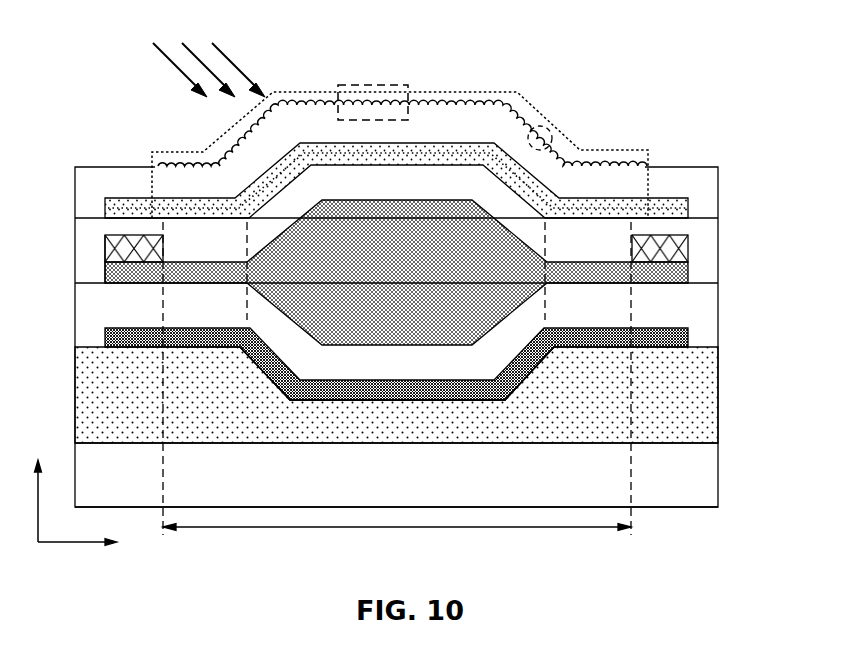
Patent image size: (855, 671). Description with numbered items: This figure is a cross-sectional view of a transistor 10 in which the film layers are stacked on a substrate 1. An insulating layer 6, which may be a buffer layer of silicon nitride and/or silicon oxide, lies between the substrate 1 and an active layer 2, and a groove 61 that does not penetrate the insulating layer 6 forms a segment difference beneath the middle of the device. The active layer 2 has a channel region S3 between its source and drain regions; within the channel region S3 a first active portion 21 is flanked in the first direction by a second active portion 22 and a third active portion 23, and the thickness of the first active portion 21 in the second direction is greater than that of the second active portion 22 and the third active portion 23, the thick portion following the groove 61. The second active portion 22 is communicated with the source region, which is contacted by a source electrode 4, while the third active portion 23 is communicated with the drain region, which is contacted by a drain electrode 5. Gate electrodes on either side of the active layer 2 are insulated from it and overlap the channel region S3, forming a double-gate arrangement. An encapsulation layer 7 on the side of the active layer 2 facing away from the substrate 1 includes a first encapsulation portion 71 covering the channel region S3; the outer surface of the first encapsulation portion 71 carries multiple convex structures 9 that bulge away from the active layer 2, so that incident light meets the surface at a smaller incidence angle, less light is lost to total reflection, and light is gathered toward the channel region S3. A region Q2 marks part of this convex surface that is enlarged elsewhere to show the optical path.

The transistor 10 is at (113, 43).
The substrate 1 is at (718, 468).
The encapsulation layer 7 is at (703, 167).
The insulating layer 6 is at (718, 403).
The groove 61 is at (513, 388).
The active layer 2 is at (436, 289).
The first active portion 21 is at (400, 327).
The second active portion 22 is at (197, 273).
The third active portion 23 is at (583, 276).
The drain electrode 5 is at (688, 240).
The source electrode 4 is at (105, 251).
The convex structures 9 is at (550, 135).
The first encapsulation portion 71 is at (585, 150).
The region Q2 is at (395, 86).
The channel region S3 is at (397, 541).